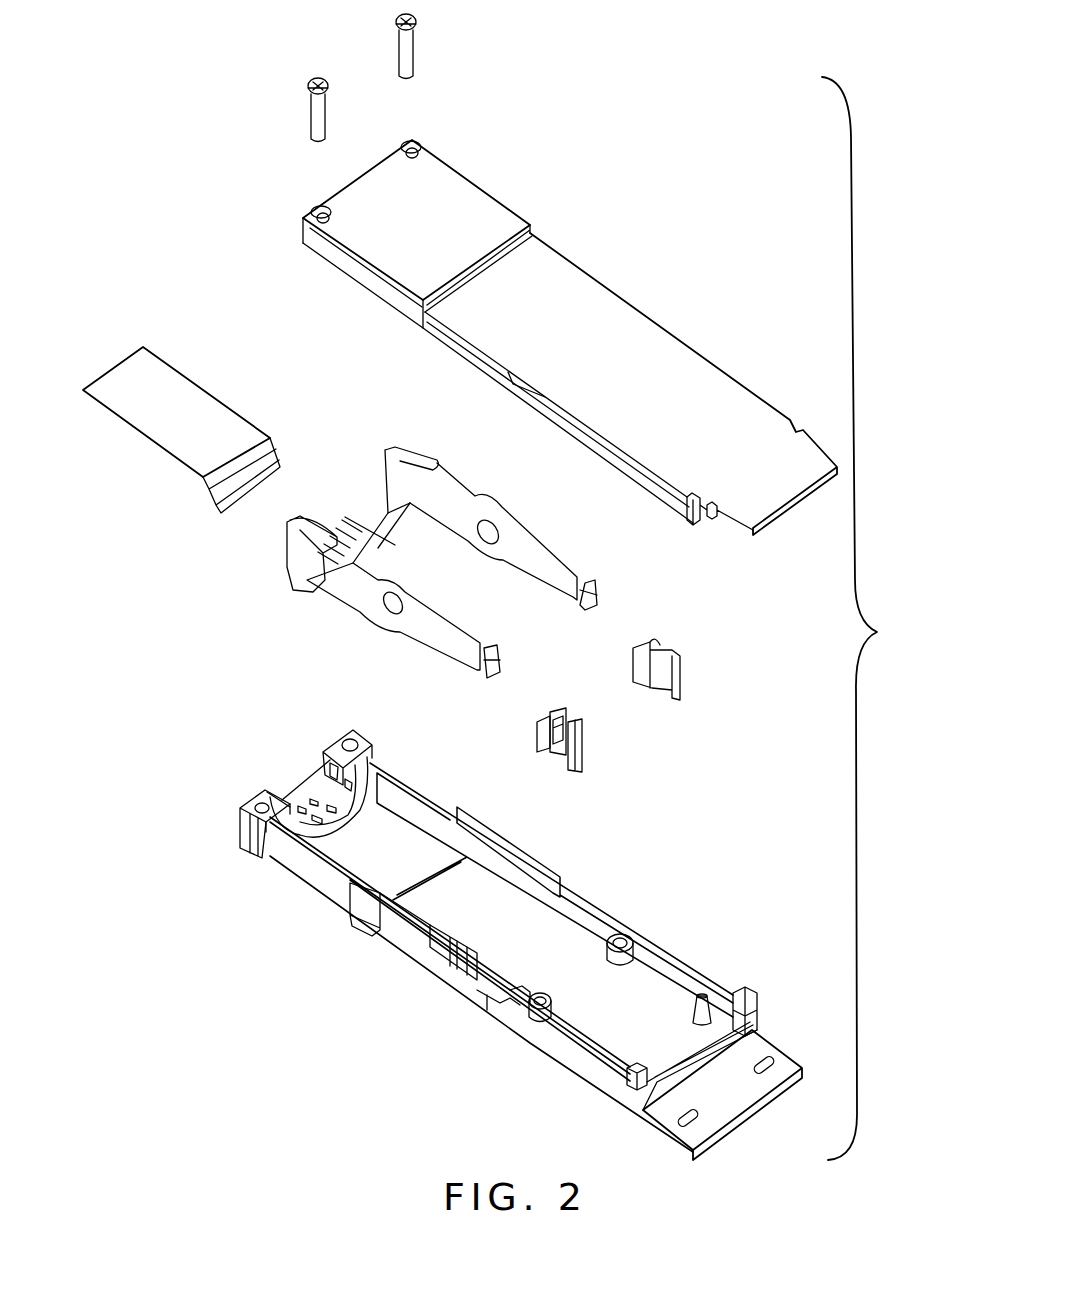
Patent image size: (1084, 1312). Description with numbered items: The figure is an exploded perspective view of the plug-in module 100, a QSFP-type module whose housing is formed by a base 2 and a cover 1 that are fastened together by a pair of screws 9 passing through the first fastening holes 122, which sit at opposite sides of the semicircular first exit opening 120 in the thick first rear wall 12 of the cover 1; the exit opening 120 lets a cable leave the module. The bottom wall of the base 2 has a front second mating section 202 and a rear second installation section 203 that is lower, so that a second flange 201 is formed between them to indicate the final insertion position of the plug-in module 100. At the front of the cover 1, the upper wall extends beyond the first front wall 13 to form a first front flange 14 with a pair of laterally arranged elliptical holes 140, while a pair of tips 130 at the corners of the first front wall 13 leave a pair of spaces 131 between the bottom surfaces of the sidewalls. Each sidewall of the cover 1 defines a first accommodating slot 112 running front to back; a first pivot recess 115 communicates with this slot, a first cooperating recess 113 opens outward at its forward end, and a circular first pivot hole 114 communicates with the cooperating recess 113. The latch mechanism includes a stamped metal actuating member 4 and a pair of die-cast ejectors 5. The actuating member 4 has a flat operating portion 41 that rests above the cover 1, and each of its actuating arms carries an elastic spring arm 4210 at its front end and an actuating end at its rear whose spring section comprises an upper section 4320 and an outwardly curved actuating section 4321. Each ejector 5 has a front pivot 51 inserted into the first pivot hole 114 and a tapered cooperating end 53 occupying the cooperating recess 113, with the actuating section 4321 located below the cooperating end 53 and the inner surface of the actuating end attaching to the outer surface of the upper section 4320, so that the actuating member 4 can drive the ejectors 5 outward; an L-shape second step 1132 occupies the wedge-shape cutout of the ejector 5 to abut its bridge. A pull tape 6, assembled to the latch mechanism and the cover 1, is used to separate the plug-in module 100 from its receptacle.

The plug-in module 100 is at (878, 618).
The cover 1 is at (507, 950).
The base 2 is at (570, 337).
The actuating member 4 is at (398, 562).
The ejector 5 is at (680, 637).
The pull tape 6 is at (247, 385).
The screws 9 is at (433, 43).
The first rear wall 12 is at (367, 795).
The first front wall 13 is at (703, 1053).
The first front flange 14 is at (730, 1090).
The operating portion 41 is at (348, 535).
The front pivot 51 is at (580, 747).
The cooperating end 53 is at (537, 733).
The first accommodating slot 112 is at (433, 930).
The first cooperating recess 113 is at (460, 977).
The first pivot hole 114 is at (517, 997).
The first pivot recess 115 is at (388, 905).
The first exit opening 120 is at (313, 810).
The first fastening holes 122 is at (262, 806).
The tips 130 is at (740, 997).
The spaces 131 is at (627, 1075).
The elliptical holes 140 is at (688, 1117).
The second flange 201 is at (510, 240).
The second mating section 202 is at (657, 353).
The second installation section 203 is at (462, 203).
The second step 1132 is at (480, 1010).
The spring arm 4210 is at (303, 523).
The upper section 4320 is at (503, 672).
The actuating section 4321 is at (487, 652).